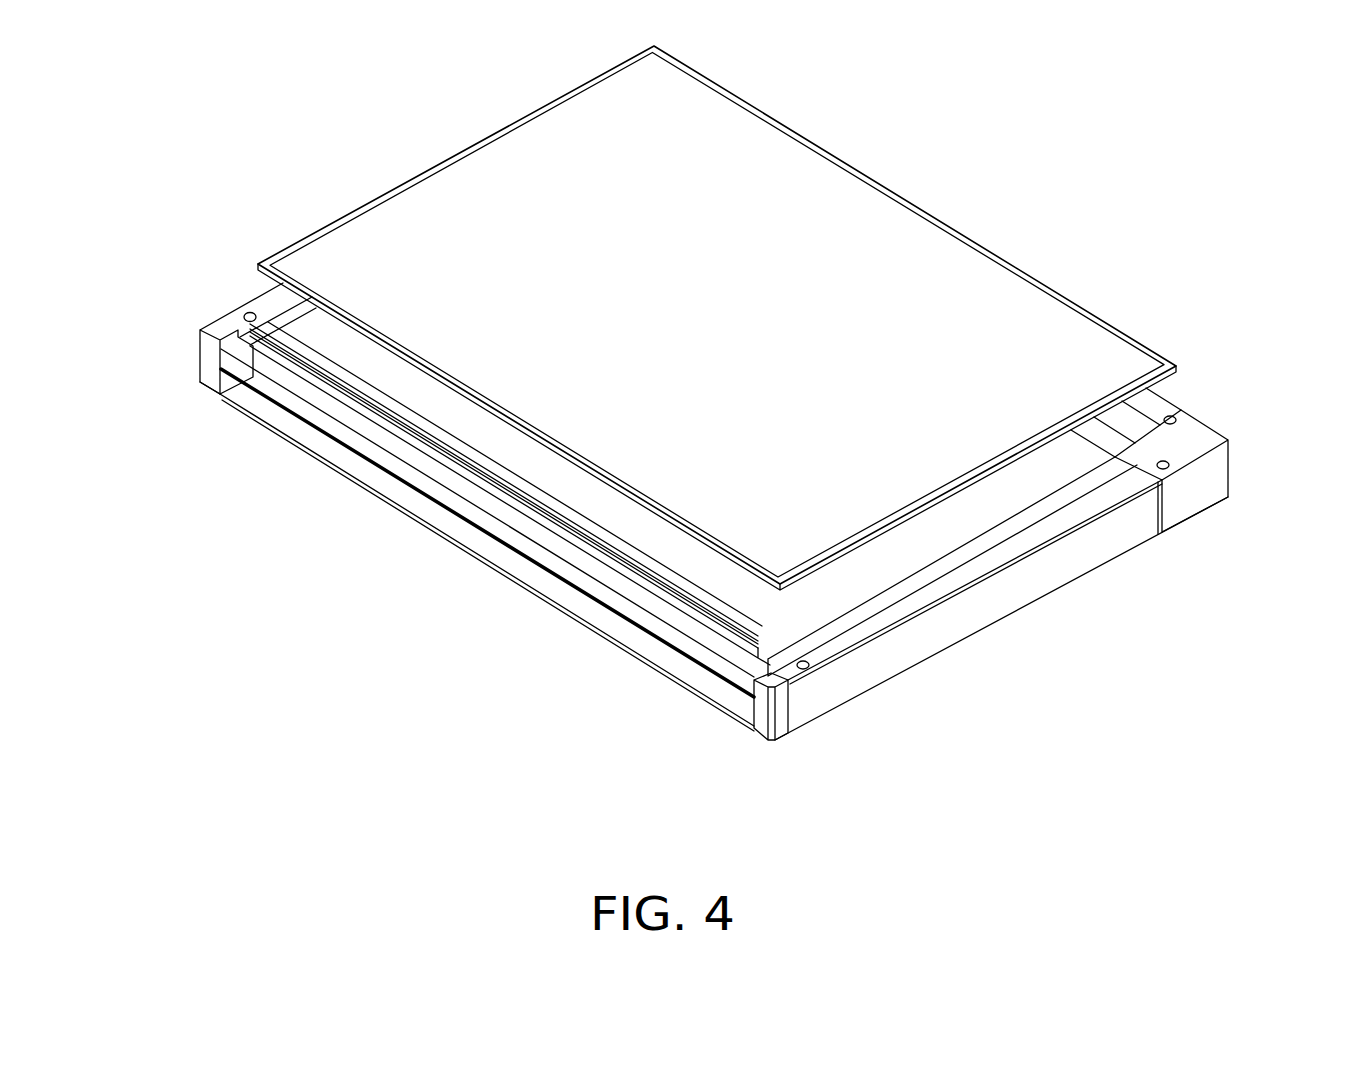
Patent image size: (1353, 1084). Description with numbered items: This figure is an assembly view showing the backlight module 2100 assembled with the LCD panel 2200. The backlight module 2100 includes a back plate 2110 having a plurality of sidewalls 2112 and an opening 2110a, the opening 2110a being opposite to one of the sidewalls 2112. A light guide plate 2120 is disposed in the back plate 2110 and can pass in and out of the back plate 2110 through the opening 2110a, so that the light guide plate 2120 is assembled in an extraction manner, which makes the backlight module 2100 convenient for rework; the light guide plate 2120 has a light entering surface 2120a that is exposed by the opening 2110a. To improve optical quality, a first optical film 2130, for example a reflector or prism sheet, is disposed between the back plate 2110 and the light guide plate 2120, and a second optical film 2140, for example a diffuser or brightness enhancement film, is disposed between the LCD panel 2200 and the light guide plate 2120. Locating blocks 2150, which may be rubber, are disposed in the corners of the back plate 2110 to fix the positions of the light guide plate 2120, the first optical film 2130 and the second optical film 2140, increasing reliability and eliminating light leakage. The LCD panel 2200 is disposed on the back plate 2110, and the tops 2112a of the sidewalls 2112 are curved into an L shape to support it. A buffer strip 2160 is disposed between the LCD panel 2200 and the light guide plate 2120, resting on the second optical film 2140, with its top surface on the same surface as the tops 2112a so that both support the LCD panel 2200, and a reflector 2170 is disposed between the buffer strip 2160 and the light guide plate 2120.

The backlight module 2100 is at (1084, 661).
The back plate 2110 is at (652, 672).
The opening 2110a is at (314, 489).
The sidewalls 2112 is at (918, 655).
The tops of the sidewalls 2112a is at (1162, 427).
The light guide plate 2120 is at (608, 584).
The light entering surface 2120a is at (517, 538).
The first optical film 2130 is at (400, 478).
The second optical film 2140 is at (805, 612).
The locating blocks 2150 is at (207, 363).
The buffer strip 2160 is at (350, 380).
The reflector 2170 is at (290, 357).
The LCD panel 2200 is at (985, 280).